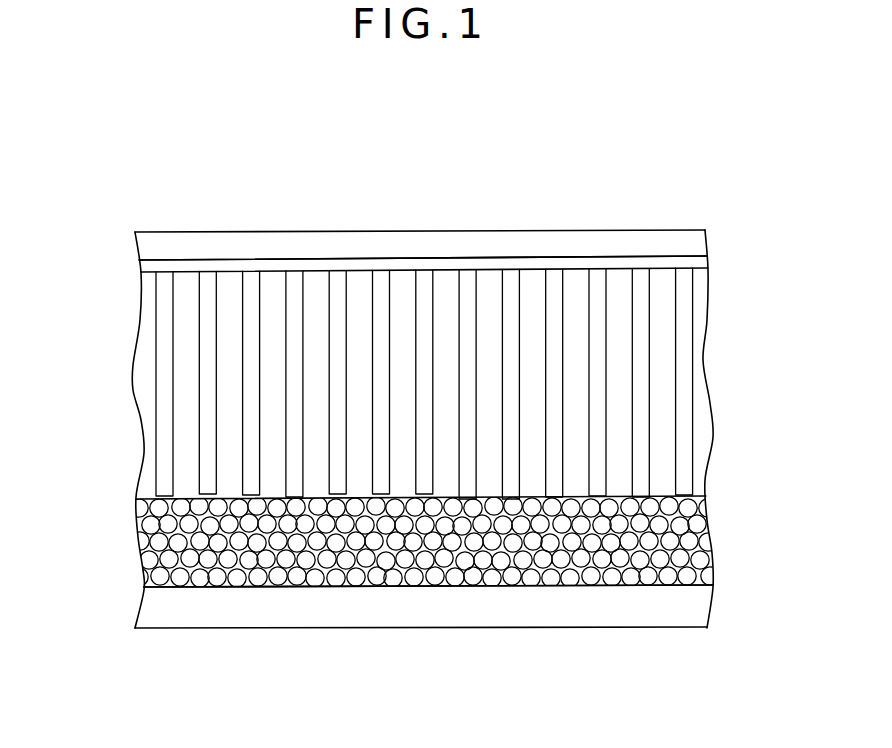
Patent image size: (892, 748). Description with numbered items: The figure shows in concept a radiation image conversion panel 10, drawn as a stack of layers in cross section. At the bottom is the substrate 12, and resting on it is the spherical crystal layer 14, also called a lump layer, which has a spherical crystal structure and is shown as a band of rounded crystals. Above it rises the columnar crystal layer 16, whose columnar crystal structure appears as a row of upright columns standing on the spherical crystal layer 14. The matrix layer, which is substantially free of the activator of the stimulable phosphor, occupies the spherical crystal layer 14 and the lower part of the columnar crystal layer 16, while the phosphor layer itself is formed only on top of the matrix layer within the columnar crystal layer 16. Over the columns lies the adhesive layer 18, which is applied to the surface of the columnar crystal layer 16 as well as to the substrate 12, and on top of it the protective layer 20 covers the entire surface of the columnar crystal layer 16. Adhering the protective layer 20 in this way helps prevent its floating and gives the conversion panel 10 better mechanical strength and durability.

The radiation image conversion panel 10 is at (638, 153).
The substrate 12 is at (703, 606).
The spherical crystal layer 14 is at (126, 547).
The columnar crystal layer 16 is at (126, 389).
The adhesive layer 18 is at (543, 268).
The protective layer 20 is at (430, 244).